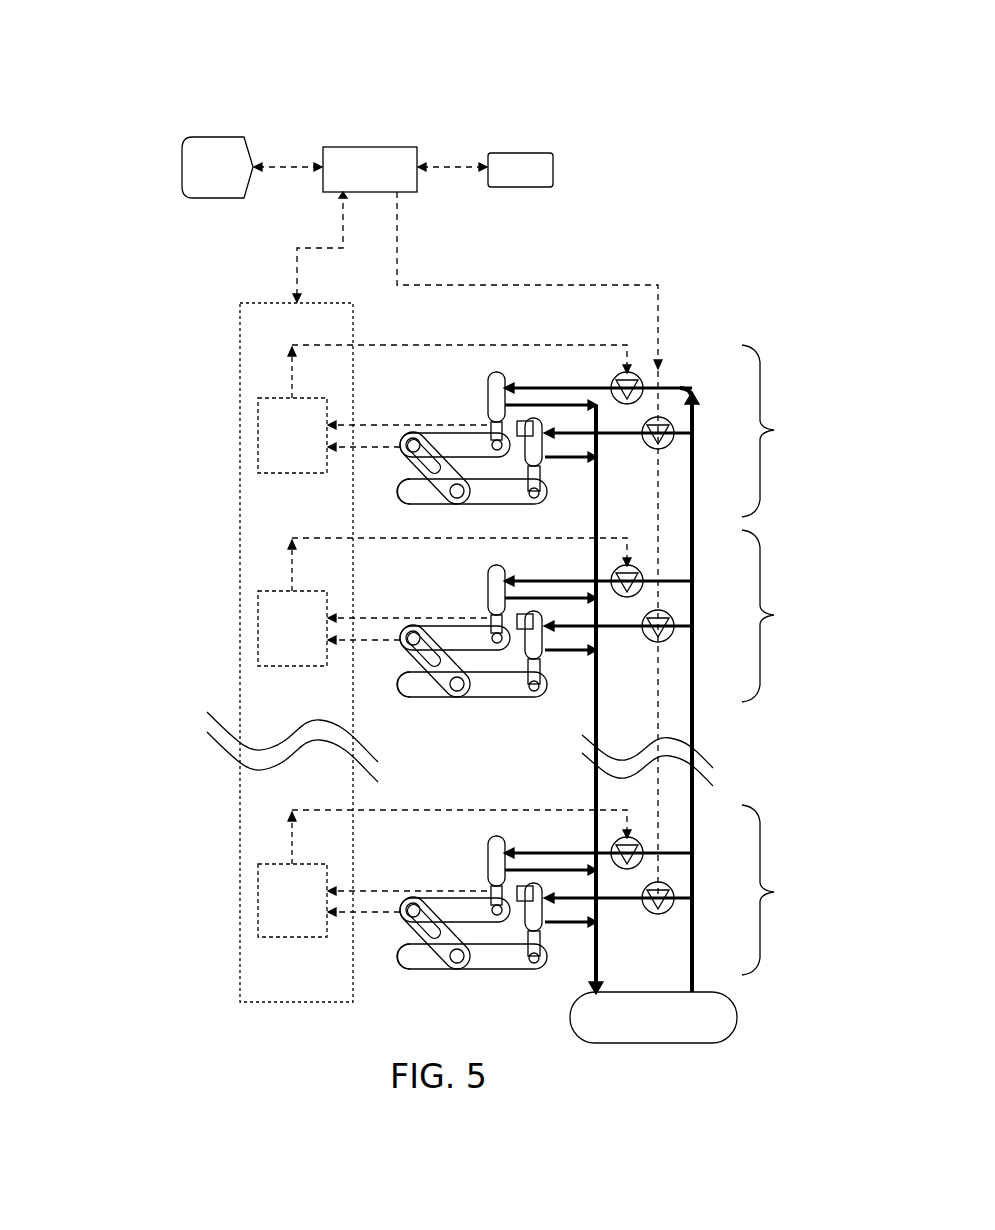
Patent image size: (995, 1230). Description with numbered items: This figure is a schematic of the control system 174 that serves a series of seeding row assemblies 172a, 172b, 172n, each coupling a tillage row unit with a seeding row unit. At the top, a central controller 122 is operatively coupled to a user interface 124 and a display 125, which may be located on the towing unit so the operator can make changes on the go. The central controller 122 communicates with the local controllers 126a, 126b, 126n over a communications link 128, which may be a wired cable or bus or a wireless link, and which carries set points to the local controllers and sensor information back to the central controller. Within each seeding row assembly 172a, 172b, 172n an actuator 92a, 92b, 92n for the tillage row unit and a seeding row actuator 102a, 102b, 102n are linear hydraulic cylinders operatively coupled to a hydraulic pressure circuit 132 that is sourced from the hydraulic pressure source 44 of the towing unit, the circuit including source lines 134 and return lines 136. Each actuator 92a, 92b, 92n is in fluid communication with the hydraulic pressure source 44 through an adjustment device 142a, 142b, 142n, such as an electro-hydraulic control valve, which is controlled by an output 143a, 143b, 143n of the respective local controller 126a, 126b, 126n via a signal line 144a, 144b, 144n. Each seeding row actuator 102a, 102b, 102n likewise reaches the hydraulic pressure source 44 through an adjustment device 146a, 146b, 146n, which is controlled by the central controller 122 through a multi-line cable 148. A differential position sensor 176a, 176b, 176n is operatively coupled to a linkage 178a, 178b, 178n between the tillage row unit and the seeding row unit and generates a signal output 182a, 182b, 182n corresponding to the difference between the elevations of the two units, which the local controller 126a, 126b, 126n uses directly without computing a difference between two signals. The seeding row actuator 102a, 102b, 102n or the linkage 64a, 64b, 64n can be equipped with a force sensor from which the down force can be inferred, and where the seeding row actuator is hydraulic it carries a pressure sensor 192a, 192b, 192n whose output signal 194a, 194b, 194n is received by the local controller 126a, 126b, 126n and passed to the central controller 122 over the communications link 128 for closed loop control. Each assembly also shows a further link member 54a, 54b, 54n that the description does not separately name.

The control system 174 is at (63, 58).
The display 125 is at (215, 135).
The central controller 122 is at (370, 169).
The user interface 124 is at (553, 153).
The communications link 128 is at (295, 265).
The multi-line cable 148 is at (484, 285).
The return lines 136 is at (596, 778).
The source lines 134 is at (697, 798).
The hydraulic pressure circuit 132 is at (703, 730).
The hydraulic pressure source 44 is at (653, 1017).
The signal line 144a is at (394, 345).
The signal line 144b is at (366, 539).
The signal line 144n is at (380, 810).
The output 143a is at (294, 383).
The output 143b is at (294, 576).
The output 143n is at (296, 844).
The local controller 126a is at (292, 435).
The local controller 126b is at (292, 628).
The local controller 126n is at (292, 900).
The output signal 194a is at (370, 427).
The output signal 194b is at (370, 619).
The output signal 194n is at (362, 893).
The signal output 182a is at (363, 450).
The signal output 182b is at (363, 644).
The signal output 182n is at (368, 918).
The actuator 92a is at (486, 388).
The actuator 92b is at (487, 578).
The actuator 92n is at (487, 866).
The upper link 54a is at (468, 456).
The upper link 54b is at (469, 649).
The upper link 54n is at (469, 921).
The differential position sensor 176a is at (433, 437).
The differential position sensor 176b is at (440, 630).
The differential position sensor 176n is at (430, 903).
The linkage 64a is at (482, 503).
The linkage 64b is at (483, 700).
The linkage 64n is at (488, 967).
The linkage 178a is at (433, 503).
The linkage 178b is at (435, 697).
The linkage 178n is at (443, 968).
The seeding row actuator 102a is at (541, 464).
The seeding row actuator 102b is at (538, 658).
The seeding row actuator 102n is at (541, 929).
The pressure sensor 192a is at (522, 414).
The pressure sensor 192b is at (524, 602).
The pressure sensor 192n is at (523, 878).
The adjustment device 142a is at (632, 372).
The adjustment device 142b is at (628, 566).
The adjustment device 142n is at (629, 832).
The adjustment device 146a is at (647, 452).
The adjustment device 146b is at (650, 643).
The adjustment device 146n is at (667, 913).
The seeding row assembly 172a is at (800, 431).
The seeding row assembly 172b is at (802, 616).
The seeding row assembly 172n is at (805, 890).